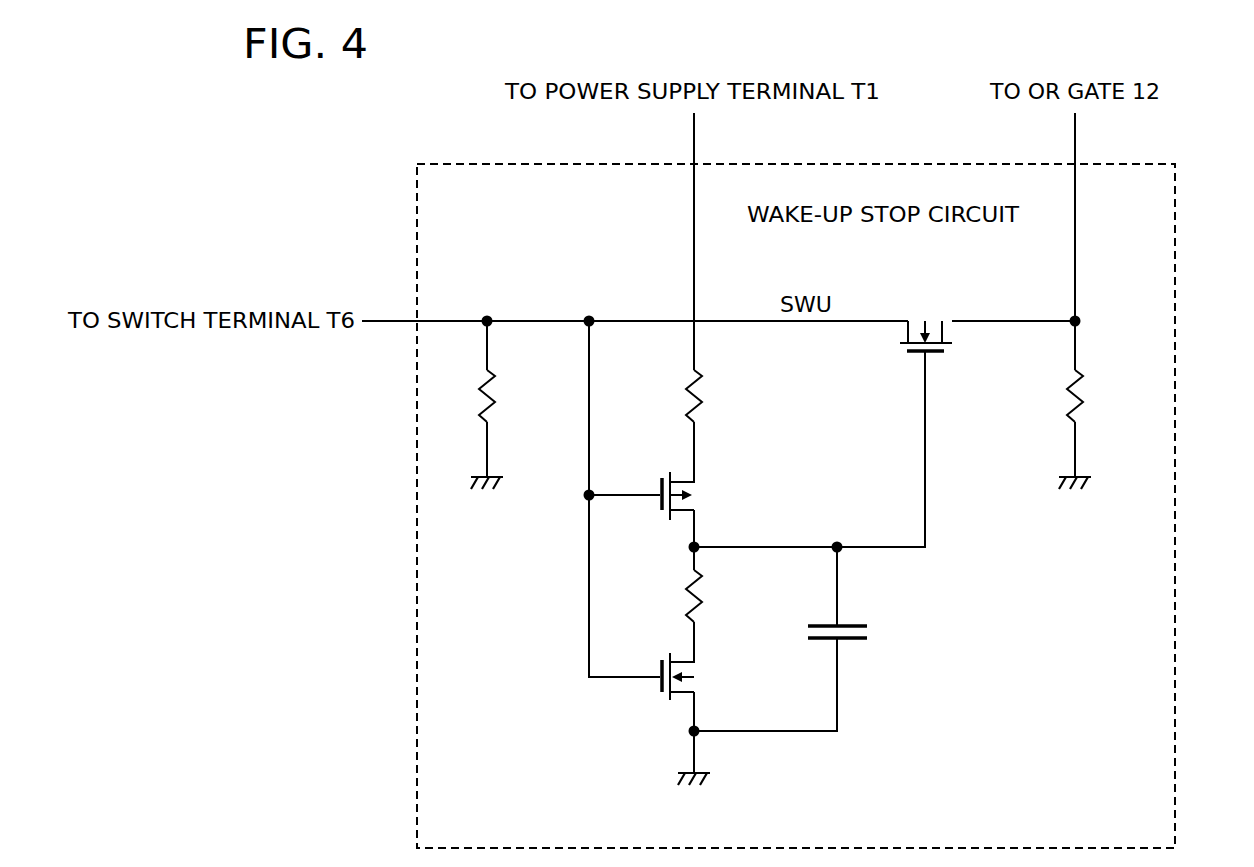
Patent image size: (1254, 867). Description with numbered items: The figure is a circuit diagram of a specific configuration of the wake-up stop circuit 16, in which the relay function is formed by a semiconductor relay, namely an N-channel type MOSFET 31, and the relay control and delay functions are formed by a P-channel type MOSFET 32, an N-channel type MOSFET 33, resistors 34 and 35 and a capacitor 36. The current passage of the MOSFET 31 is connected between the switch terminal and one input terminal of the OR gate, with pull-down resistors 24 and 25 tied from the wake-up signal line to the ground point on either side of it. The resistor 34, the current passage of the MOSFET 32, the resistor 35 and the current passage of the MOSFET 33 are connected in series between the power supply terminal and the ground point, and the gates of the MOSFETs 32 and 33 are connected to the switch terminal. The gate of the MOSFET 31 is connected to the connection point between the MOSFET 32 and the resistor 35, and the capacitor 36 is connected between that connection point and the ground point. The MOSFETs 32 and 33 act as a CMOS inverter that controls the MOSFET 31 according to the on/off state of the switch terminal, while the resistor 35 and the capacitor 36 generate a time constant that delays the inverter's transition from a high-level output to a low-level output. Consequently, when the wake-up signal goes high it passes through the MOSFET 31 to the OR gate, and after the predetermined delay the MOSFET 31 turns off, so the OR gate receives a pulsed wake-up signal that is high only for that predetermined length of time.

The wake-up stop circuit 16 is at (1175, 265).
The pull-down resistor 24 is at (497, 388).
The pull-down resistor 25 is at (1085, 388).
The N-channel type MOSFET 31 is at (926, 318).
The P-channel type MOSFET 32 is at (690, 498).
The N-channel type MOSFET 33 is at (690, 680).
The resistor 34 is at (702, 388).
The resistor 35 is at (702, 602).
The capacitor 36 is at (862, 625).